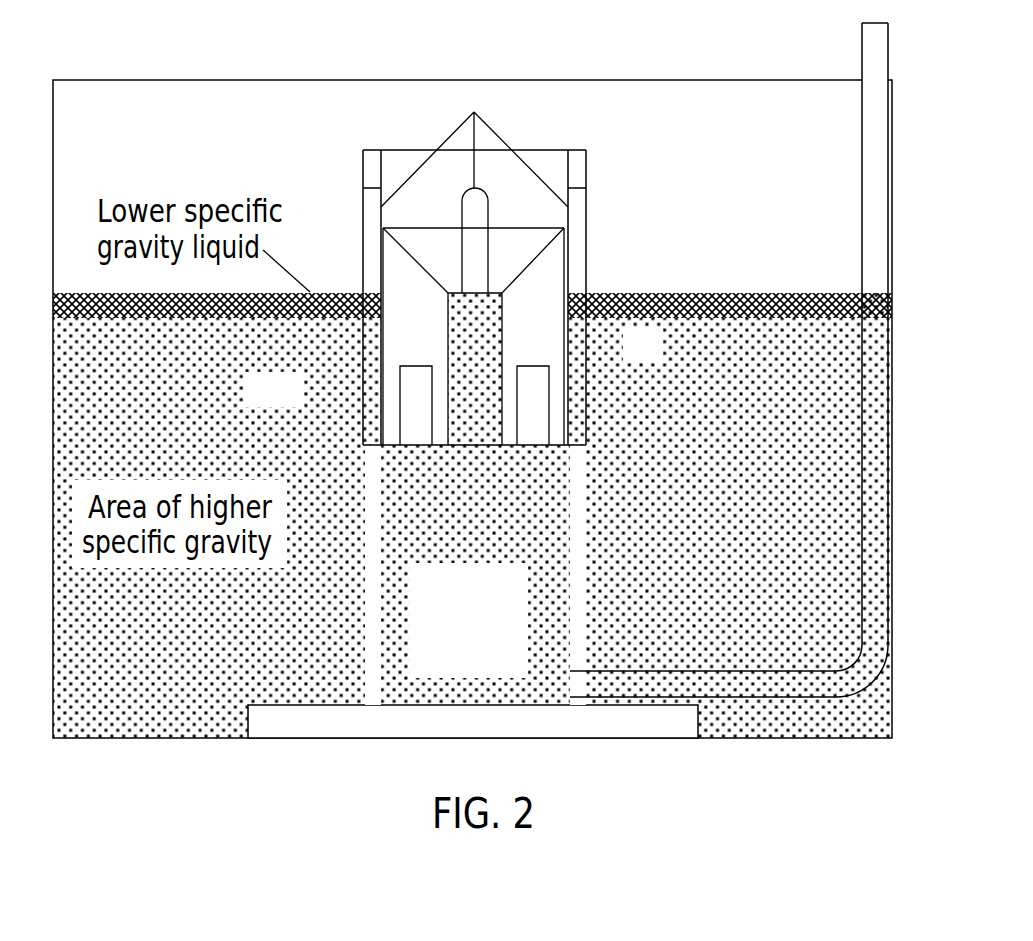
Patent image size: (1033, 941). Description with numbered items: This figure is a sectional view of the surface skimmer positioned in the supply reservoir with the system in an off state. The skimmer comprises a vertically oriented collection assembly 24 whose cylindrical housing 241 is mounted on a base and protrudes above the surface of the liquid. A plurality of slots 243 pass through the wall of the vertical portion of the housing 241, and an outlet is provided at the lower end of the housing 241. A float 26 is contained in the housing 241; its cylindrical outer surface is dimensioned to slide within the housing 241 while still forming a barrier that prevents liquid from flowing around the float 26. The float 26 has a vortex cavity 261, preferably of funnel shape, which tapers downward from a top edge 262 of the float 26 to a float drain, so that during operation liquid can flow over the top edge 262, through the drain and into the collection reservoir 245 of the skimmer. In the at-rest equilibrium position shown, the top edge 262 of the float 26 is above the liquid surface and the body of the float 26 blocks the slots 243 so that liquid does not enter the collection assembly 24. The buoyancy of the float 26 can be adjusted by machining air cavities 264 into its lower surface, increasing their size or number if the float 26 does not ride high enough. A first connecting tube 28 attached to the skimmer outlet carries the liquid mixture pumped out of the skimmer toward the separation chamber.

The collection assembly 24 is at (367, 162).
The cylindrical housing 241 is at (585, 162).
The slots 243 is at (474, 112).
The collection reservoir 245 is at (475, 575).
The float 26 is at (543, 341).
The vortex cavity 261 is at (514, 245).
The top edge 262 is at (564, 228).
The air cavities 264 is at (418, 382).
The first connecting tube 28 is at (862, 142).